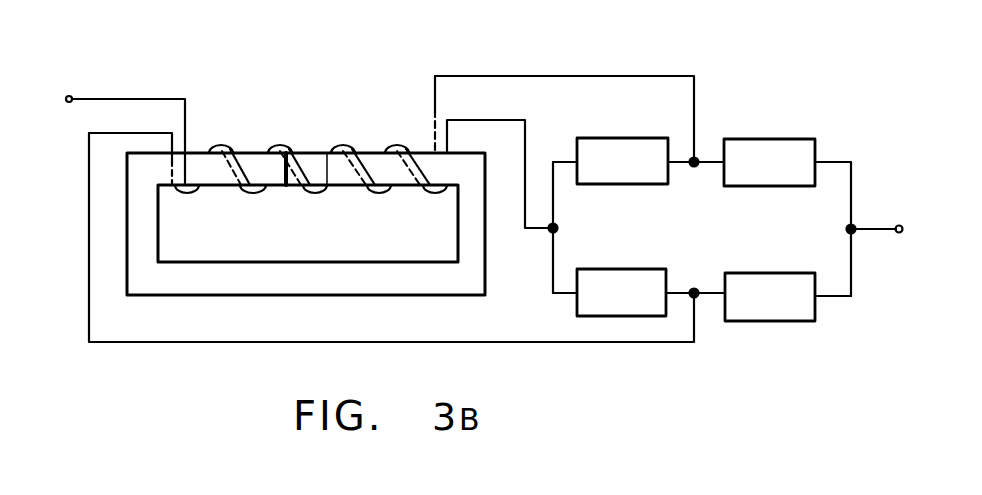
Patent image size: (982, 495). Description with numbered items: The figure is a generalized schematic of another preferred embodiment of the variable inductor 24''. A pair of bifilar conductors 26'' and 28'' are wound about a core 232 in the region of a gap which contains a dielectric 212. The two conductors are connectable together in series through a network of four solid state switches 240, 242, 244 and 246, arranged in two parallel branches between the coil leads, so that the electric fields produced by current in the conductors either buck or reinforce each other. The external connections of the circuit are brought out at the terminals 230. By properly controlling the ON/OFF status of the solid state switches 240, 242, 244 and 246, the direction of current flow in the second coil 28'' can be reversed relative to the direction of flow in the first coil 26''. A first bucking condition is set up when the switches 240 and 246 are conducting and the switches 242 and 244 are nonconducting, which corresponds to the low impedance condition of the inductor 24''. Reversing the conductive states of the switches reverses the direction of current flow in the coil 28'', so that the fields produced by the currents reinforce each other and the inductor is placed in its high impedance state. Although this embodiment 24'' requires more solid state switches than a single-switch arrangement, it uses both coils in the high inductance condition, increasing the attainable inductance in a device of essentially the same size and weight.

The output terminals 230 is at (70, 97).
The bifilar conductor 28'' is at (316, 135).
The bifilar conductor 26'' is at (311, 134).
The variable inductor 24'' is at (470, 182).
The dielectric 212 is at (312, 182).
The core 232 is at (322, 262).
The solid state switch 240 is at (625, 138).
The solid state switch 242 is at (783, 139).
The solid state switch 244 is at (625, 269).
The solid state switch 246 is at (765, 273).